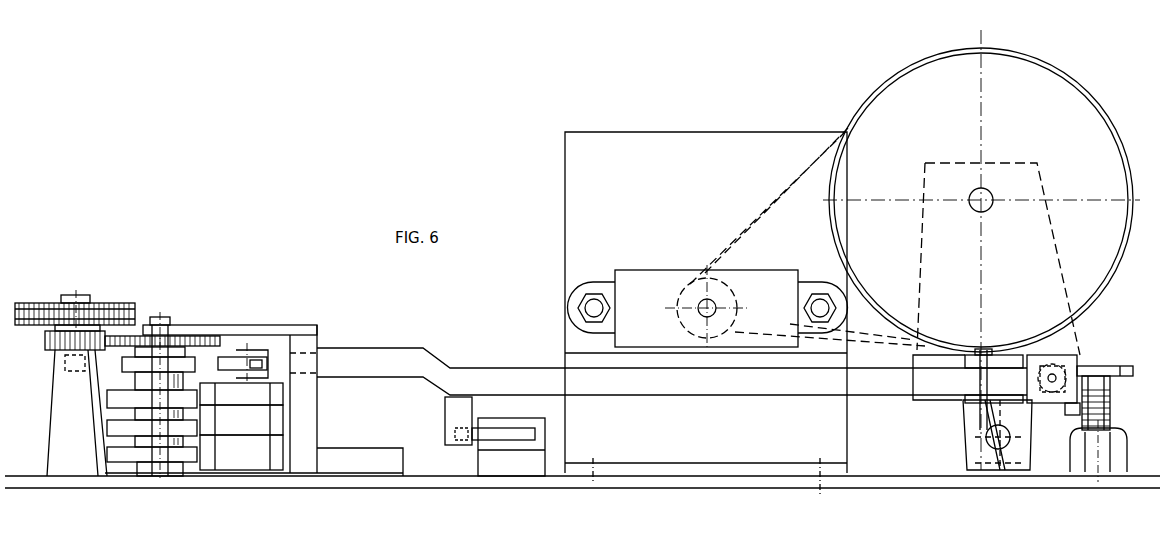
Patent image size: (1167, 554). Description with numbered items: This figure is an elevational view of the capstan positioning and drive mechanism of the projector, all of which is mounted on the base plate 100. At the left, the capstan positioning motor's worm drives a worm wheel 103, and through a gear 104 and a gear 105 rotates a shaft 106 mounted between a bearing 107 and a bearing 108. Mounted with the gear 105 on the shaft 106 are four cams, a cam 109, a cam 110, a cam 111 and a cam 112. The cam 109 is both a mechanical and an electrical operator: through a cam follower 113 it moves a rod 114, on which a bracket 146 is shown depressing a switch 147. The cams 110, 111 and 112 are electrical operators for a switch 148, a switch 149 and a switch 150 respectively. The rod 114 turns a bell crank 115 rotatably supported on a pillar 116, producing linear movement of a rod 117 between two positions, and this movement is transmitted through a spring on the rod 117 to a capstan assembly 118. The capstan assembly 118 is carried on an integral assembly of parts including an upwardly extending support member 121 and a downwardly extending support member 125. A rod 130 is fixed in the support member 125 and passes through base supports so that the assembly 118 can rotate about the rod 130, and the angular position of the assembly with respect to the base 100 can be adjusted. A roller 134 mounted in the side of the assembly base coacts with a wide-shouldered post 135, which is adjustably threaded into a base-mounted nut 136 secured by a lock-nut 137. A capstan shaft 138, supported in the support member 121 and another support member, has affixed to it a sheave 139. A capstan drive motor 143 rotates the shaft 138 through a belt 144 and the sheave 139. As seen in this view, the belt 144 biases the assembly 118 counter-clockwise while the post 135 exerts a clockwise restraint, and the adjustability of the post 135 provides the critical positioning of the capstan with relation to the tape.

The base plate 100 is at (645, 480).
The worm wheel 103 is at (22, 305).
The gear 104 is at (55, 338).
The gear 105 is at (200, 337).
The shaft 106 is at (160, 317).
The bearing 107 is at (175, 325).
The bearing 108 is at (157, 470).
The cam 109 is at (232, 356).
The cam 110 is at (107, 400).
The cam 111 is at (107, 428).
The cam 112 is at (107, 455).
The cam follower 113 is at (270, 363).
The rod 114 is at (458, 380).
The bell crank 115 is at (968, 355).
The pillar 116 is at (963, 458).
The rod 117 is at (1082, 350).
The capstan assembly 118 is at (1070, 65).
The support member 121 is at (1078, 330).
The support member 125 is at (962, 416).
The rod 130 is at (1000, 450).
The roller 134 is at (1068, 412).
The post 135 is at (1112, 367).
The nut 136 is at (1118, 468).
The lock-nut 137 is at (1112, 430).
The capstan shaft 138 is at (987, 192).
The sheave 139 is at (898, 82).
The capstan drive motor 143 is at (662, 140).
The belt 144 is at (848, 128).
The bracket 146 is at (447, 422).
The switch 147 is at (490, 418).
The switch 148 is at (272, 395).
The switch 149 is at (268, 423).
The switch 150 is at (267, 455).